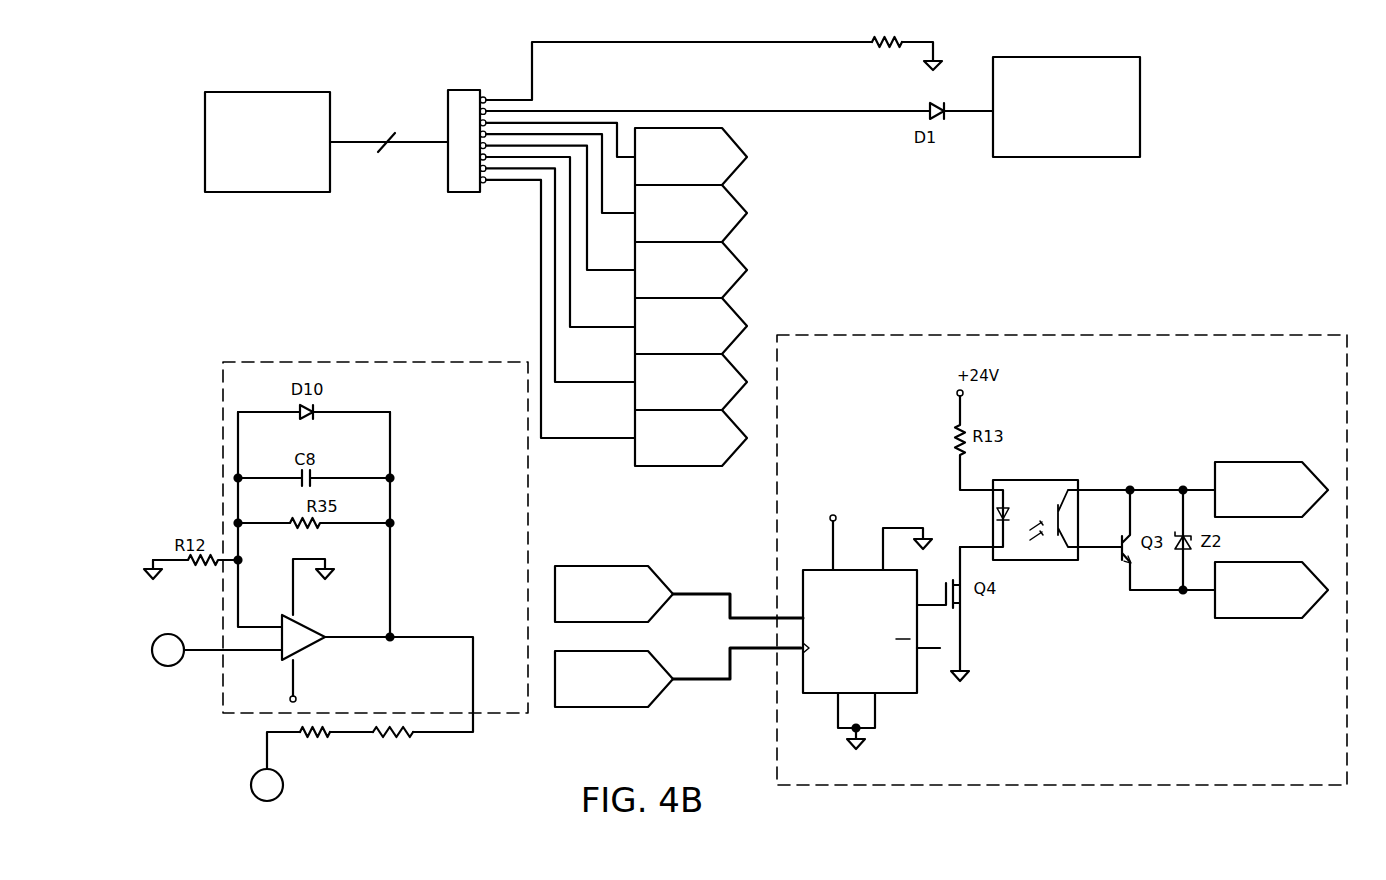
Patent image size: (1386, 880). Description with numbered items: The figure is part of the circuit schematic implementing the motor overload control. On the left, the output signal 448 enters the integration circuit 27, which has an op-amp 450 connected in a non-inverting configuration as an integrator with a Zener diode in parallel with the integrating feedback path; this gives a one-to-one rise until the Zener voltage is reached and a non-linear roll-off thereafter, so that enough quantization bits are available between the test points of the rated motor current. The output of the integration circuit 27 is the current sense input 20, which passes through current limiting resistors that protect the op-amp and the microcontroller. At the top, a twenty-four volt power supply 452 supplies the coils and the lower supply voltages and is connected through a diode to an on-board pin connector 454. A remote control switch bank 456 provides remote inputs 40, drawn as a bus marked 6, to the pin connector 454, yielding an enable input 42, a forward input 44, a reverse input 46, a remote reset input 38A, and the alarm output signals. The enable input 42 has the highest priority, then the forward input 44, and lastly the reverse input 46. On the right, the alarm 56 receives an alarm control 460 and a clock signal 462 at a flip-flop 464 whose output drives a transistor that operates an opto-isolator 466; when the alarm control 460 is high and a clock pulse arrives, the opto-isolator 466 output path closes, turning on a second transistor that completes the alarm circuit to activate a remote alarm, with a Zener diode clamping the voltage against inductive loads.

The switch bank bus 6 is at (386, 132).
The current sense input 20 is at (442, 733).
The integration circuit 27 is at (375, 362).
The remote reset input 38A is at (747, 326).
The remote inputs 40 is at (360, 144).
The enable input 42 is at (747, 157).
The forward input 44 is at (747, 213).
The reverse input 46 is at (747, 270).
The alarm 56 is at (998, 787).
The output signal 448 is at (215, 645).
The op-amp 450 is at (318, 643).
The 24VDC power supply 452 is at (1068, 158).
The on-board pin connector 454 is at (455, 88).
The control switch bank 456 is at (270, 193).
The alarm control 460 is at (630, 566).
The clock signal 462 is at (625, 708).
The flip-flop 464 is at (828, 694).
The opto-isolator 466 is at (1040, 488).